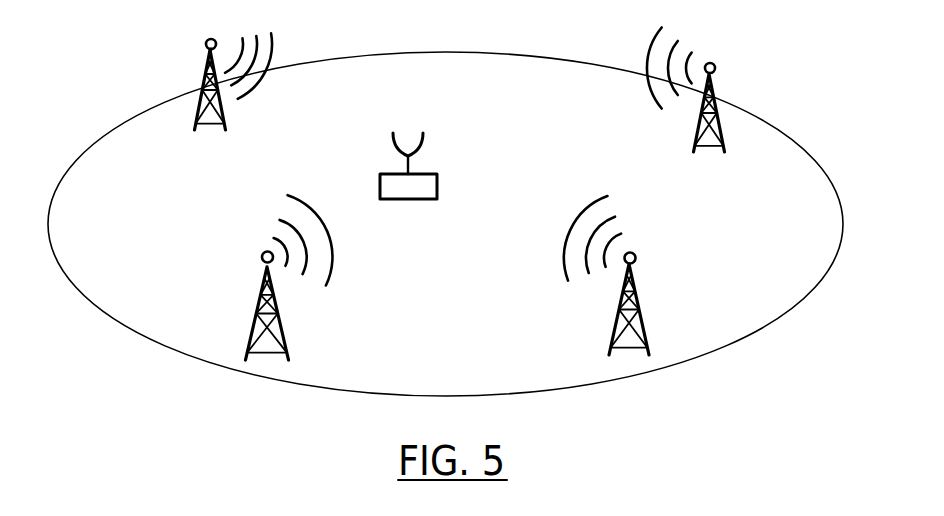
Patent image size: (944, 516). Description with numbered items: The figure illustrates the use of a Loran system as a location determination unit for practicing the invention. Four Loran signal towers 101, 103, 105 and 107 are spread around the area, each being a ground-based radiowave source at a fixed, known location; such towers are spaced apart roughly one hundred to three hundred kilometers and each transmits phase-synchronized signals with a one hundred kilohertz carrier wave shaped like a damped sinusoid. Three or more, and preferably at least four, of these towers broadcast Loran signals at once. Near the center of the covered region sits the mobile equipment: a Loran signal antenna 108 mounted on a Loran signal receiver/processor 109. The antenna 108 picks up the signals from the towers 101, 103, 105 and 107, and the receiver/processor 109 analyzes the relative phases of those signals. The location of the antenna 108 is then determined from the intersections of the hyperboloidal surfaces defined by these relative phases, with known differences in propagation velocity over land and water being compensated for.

The Loran signal tower 101 is at (207, 41).
The Loran signal tower 103 is at (715, 64).
The Loran signal tower 105 is at (636, 254).
The Loran signal tower 107 is at (262, 253).
The Loran signal antenna 108 is at (412, 163).
The Loran signal receiver/processor 109 is at (415, 190).